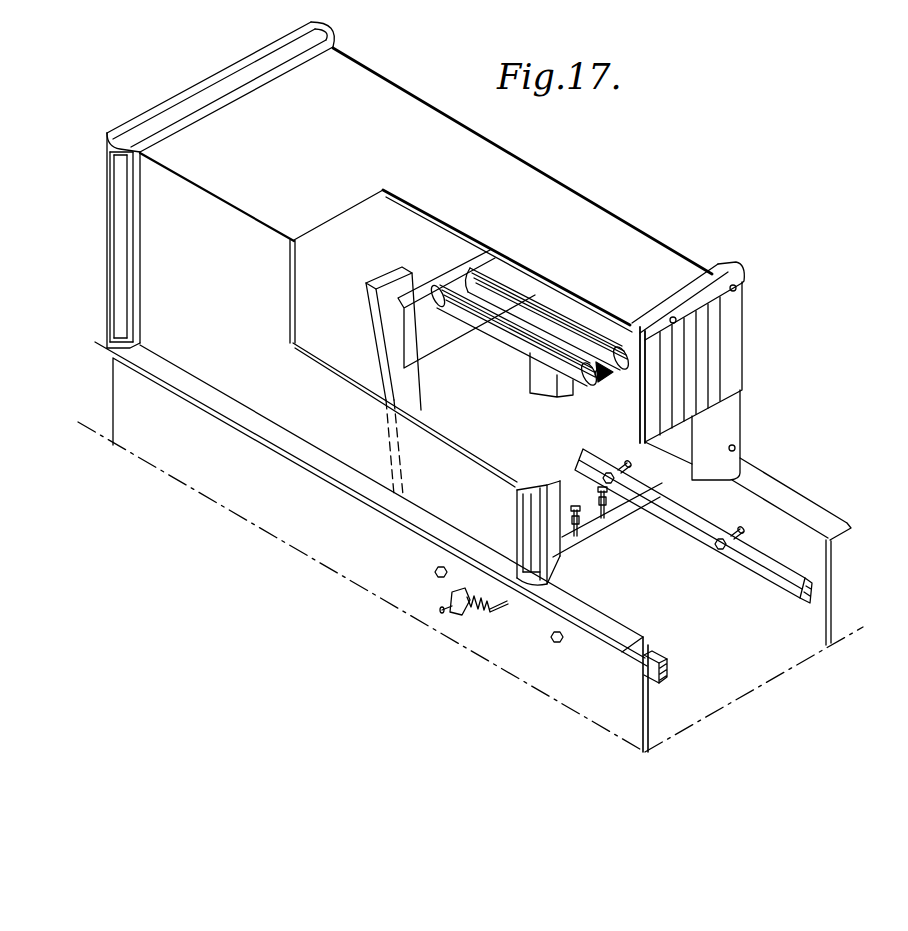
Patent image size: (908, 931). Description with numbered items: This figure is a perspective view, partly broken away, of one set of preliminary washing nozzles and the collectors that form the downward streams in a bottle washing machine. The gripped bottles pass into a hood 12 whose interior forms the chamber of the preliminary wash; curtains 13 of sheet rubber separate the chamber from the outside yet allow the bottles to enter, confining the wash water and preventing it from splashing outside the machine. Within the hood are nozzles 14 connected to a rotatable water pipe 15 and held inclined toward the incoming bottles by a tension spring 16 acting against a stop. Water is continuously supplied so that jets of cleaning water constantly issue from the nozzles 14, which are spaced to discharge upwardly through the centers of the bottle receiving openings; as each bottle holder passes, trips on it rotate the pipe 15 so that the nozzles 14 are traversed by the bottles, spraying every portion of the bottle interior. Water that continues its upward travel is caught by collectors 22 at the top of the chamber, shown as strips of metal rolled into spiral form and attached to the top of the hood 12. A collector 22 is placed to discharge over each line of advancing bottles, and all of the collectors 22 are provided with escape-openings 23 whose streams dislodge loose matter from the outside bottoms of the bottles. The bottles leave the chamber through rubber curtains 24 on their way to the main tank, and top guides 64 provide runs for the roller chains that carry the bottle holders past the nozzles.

The hood 12 is at (470, 387).
The curtains 13 is at (727, 353).
The nozzles 14 is at (598, 494).
The rotatable water pipe 15 is at (612, 522).
The tension spring 16 is at (484, 610).
The collectors 22 is at (528, 300).
The escape-openings 23 is at (628, 366).
The rubber curtains 24 is at (397, 266).
The top guides 64 is at (680, 663).